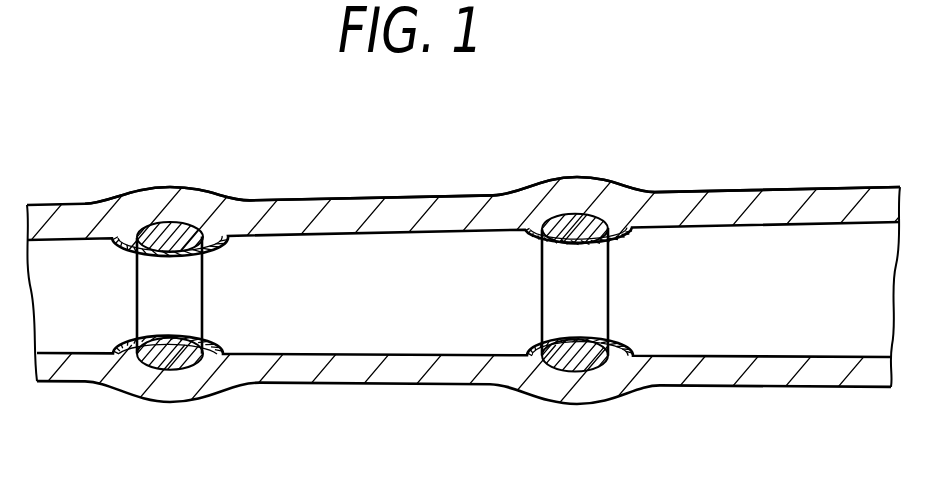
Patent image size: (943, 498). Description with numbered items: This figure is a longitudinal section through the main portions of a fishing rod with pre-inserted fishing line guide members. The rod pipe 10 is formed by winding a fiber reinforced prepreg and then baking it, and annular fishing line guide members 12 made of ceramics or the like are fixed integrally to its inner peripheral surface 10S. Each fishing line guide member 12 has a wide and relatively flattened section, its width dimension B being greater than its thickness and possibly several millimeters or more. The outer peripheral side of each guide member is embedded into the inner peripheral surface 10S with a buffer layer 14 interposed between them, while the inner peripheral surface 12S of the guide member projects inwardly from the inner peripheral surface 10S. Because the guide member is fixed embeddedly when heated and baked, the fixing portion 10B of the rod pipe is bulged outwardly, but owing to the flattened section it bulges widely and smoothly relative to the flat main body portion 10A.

The rod pipe 10 is at (462, 196).
The main body portion 10A is at (353, 207).
The fixing portion 10B is at (187, 199).
The inner peripheral surface 10S is at (340, 235).
The fishing line guide member 12 is at (181, 241).
The inner peripheral surface of the fishing line guide member 12S is at (163, 254).
The buffer layer 14 is at (143, 228).
The width dimension B is at (100, 316).